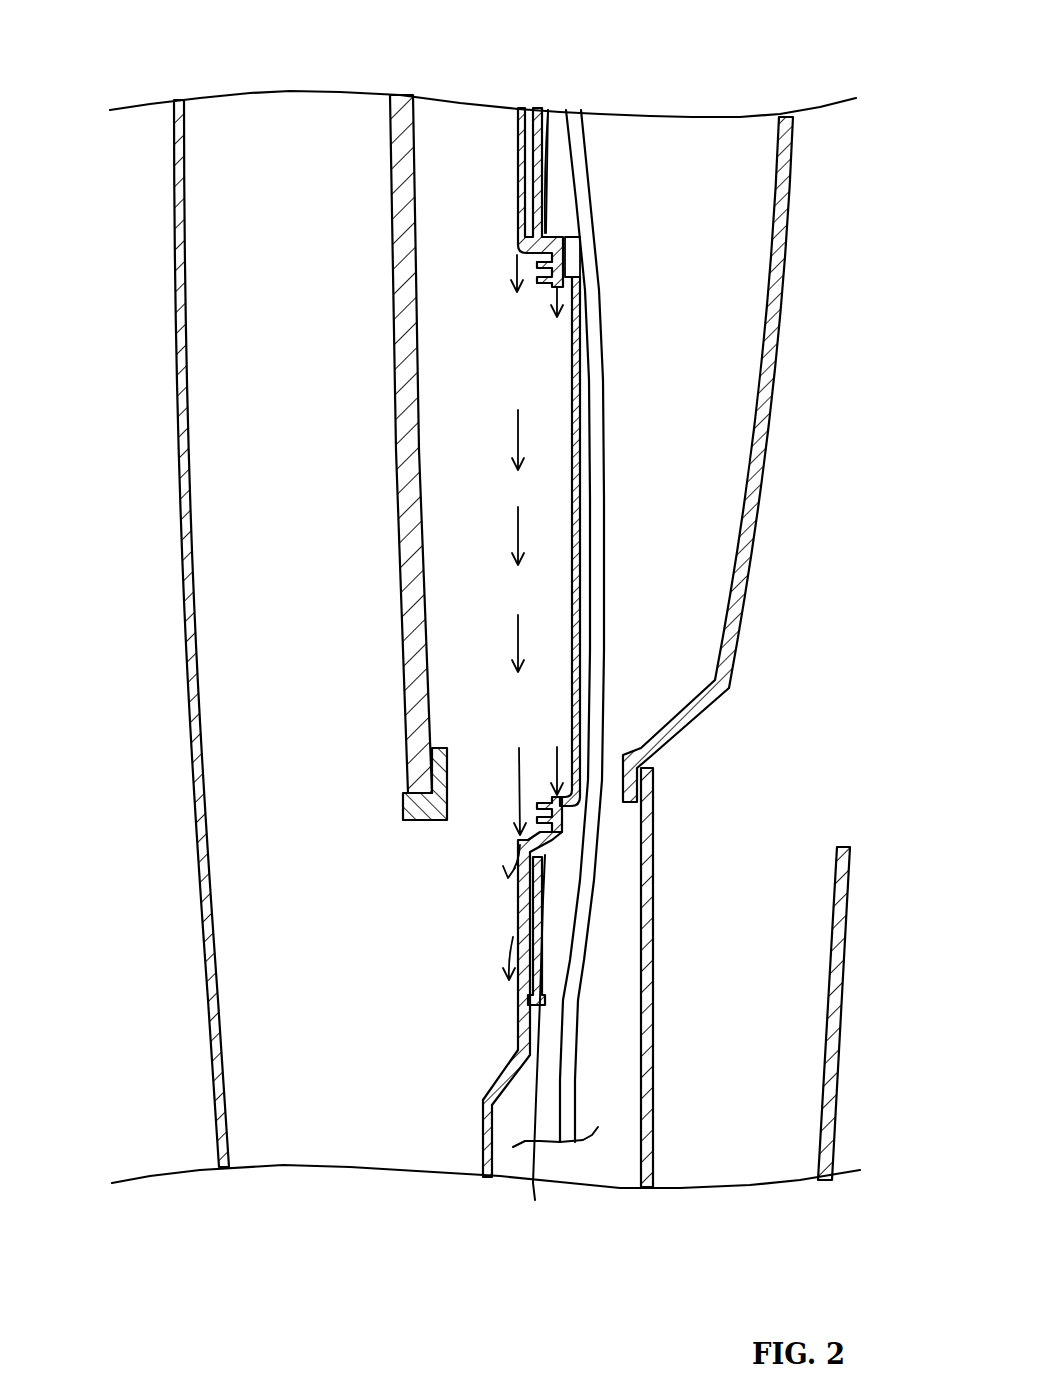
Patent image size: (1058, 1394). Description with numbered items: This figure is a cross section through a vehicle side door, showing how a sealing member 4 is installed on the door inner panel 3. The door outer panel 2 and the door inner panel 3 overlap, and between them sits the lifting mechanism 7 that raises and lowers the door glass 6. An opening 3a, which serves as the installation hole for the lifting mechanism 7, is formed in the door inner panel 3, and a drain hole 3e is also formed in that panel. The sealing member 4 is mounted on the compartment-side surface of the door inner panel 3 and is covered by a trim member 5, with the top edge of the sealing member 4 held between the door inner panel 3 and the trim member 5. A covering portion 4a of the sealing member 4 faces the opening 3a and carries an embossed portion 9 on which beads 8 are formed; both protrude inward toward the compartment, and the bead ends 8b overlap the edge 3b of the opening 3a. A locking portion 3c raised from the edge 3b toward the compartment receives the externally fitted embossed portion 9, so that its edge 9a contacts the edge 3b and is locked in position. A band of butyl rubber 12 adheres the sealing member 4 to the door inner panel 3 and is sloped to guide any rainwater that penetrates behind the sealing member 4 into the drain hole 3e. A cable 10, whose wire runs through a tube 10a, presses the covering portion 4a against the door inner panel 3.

The door outer panel 2 is at (172, 162).
The door inner panel 3 is at (568, 693).
The opening 3a is at (545, 290).
The edge of the opening 3b is at (570, 266).
The locking portion 3c is at (547, 303).
The drain hole 3e is at (513, 920).
The sealing member 4 is at (547, 930).
The covering portion 4a is at (571, 393).
The trim member 5 is at (748, 552).
The door glass 6 is at (395, 486).
The lifting mechanism 7 is at (403, 800).
The bead 8 is at (515, 522).
The bead end 8b is at (567, 270).
The embossed portion 9 is at (573, 260).
The edge of the embossed portion 9a is at (548, 110).
The cable 10 is at (713, 626).
The tube 10a is at (605, 397).
The butyl rubber 12 is at (535, 1200).